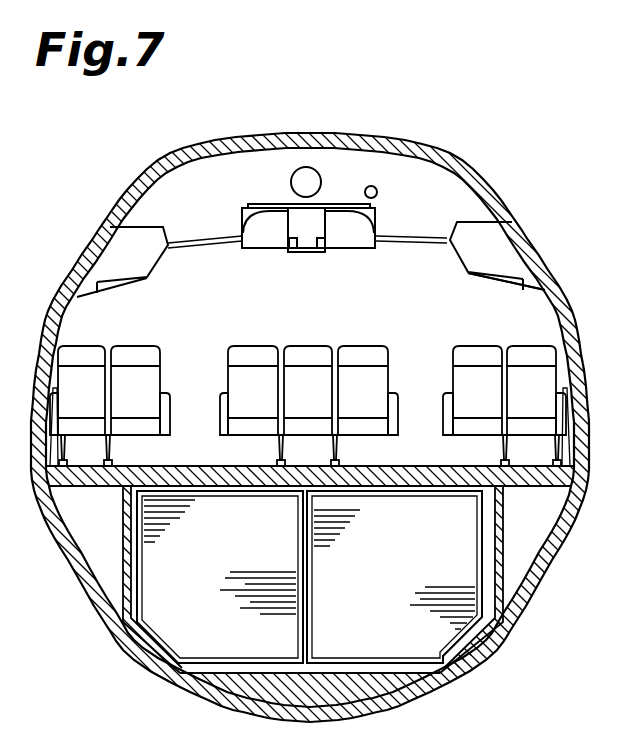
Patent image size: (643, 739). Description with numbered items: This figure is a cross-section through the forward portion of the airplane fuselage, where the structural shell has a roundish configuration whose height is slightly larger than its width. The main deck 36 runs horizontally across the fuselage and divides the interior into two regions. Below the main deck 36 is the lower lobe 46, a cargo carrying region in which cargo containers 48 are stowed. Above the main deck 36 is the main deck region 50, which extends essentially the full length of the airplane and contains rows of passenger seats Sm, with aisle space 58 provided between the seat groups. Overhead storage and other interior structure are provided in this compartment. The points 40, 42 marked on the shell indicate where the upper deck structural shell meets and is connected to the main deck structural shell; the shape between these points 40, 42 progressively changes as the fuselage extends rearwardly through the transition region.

The main deck 36 is at (385, 475).
The intersection line 40 is at (85, 242).
The intersection line 42 is at (532, 238).
The lower lobe 46 is at (487, 577).
The cargo containers 48 is at (185, 638).
The main deck region 50 is at (522, 305).
The aisle space 58 is at (200, 418).
The passenger seats Sm is at (85, 348).